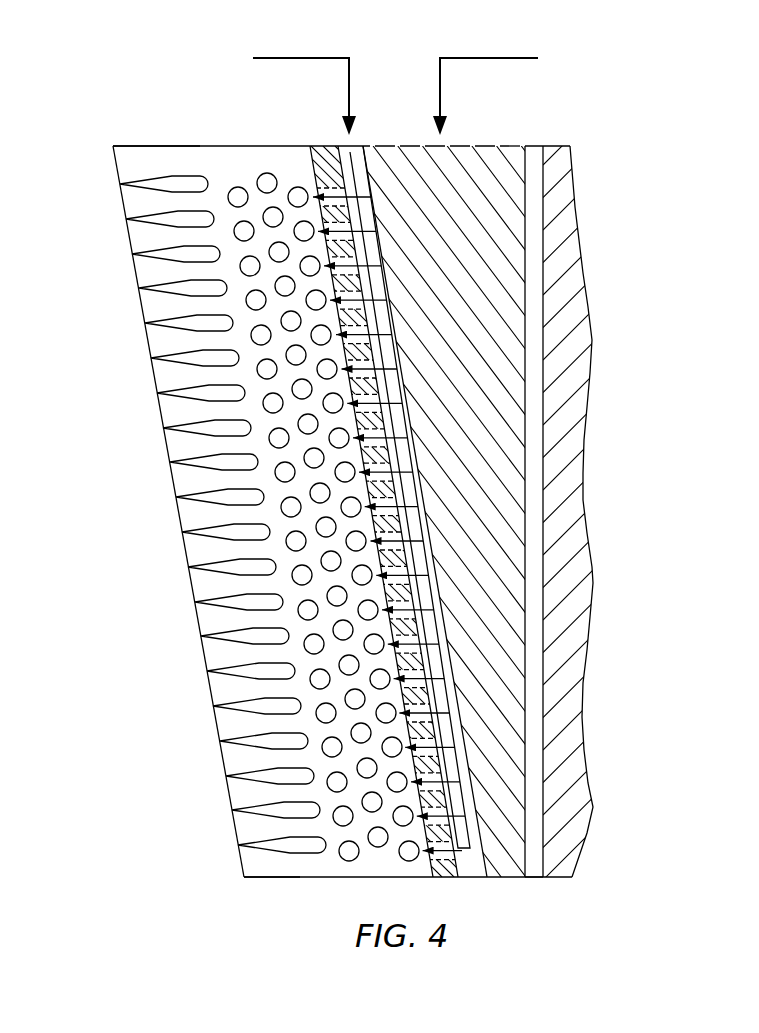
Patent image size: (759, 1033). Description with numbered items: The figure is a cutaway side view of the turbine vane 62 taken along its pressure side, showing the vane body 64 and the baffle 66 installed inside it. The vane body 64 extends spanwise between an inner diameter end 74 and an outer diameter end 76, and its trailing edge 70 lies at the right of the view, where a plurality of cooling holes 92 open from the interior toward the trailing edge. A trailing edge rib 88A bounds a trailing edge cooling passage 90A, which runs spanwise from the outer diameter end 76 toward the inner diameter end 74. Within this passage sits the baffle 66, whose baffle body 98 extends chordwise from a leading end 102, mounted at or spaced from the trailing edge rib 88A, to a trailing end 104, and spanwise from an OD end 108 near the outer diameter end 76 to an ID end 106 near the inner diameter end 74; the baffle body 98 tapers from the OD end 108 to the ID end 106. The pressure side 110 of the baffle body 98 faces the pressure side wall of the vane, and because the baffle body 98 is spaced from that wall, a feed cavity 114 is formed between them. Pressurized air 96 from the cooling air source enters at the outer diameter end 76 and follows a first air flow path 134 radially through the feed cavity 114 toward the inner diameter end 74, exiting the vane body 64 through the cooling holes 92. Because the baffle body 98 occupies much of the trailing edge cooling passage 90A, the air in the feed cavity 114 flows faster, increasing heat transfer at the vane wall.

The turbine vane 62 is at (619, 112).
The vane body 64 is at (327, 158).
The baffle 66 is at (495, 358).
The trailing edge 70 is at (190, 718).
The inner diameter (ID) end 74 is at (532, 892).
The outer diameter (OD) end 76 is at (215, 127).
The trailing edge rib 88A is at (562, 245).
The trailing edge cooling passage 90A is at (535, 315).
The cooling holes 92 is at (192, 512).
The pressurized air 96 is at (270, 57).
The baffle body 98 is at (493, 198).
The leading end 102 is at (527, 450).
The trailing end 104 is at (443, 766).
The ID end 106 is at (502, 878).
The OD end 108 is at (480, 146).
The pressure side 110 is at (490, 415).
The feed cavity 114 is at (533, 580).
The first air flow path 134 is at (366, 175).